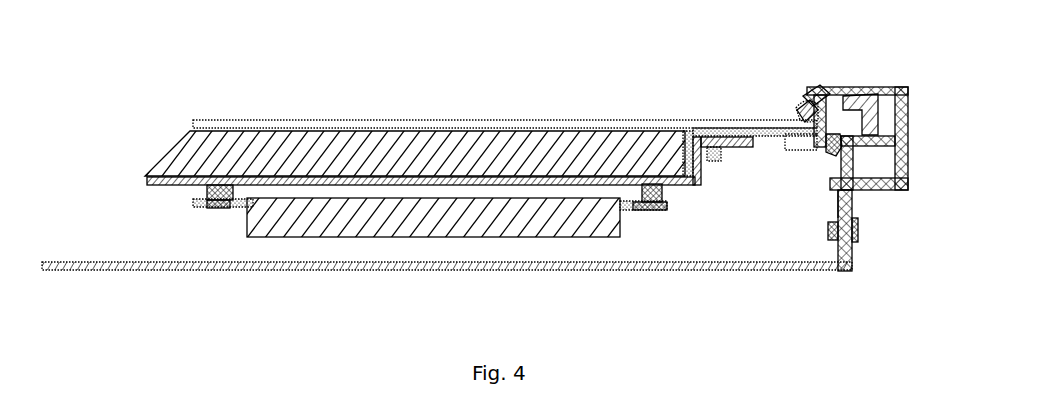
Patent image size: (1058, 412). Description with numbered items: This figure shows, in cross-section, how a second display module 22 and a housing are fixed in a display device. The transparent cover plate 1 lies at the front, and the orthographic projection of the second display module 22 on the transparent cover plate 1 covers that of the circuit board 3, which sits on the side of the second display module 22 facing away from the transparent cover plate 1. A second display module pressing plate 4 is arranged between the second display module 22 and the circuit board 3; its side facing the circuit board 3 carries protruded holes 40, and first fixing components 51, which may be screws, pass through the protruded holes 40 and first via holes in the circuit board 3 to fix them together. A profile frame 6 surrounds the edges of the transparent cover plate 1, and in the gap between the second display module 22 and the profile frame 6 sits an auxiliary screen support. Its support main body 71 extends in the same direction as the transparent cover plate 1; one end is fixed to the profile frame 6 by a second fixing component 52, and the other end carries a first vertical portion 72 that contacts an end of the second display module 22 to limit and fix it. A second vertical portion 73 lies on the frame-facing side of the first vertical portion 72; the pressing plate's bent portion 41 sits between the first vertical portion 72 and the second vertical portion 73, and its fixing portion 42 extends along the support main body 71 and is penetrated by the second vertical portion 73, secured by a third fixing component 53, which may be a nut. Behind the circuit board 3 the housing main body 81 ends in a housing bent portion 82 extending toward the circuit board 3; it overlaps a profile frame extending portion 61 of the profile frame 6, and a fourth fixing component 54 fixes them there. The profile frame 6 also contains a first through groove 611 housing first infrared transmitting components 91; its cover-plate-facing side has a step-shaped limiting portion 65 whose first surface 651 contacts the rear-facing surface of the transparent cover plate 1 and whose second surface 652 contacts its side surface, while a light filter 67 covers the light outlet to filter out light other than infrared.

The transparent cover plate 1 is at (538, 128).
The second display module 22 is at (470, 126).
The circuit board 3 is at (590, 237).
The second display module pressing plate 4 is at (150, 185).
The protruded holes 40 is at (200, 203).
The first fixing components 51 is at (218, 209).
The bent portion 41 is at (681, 133).
The fixing portion 42 is at (728, 133).
The first vertical portion 72 is at (712, 184).
The second vertical portion 73 is at (722, 150).
The third fixing component 53 is at (722, 153).
The support main body 71 is at (790, 152).
The profile frame 6 is at (908, 118).
The first through groove 611 is at (904, 92).
The profile frame extending portion 61 is at (855, 200).
The housing bent portion 82 is at (838, 200).
The fourth fixing component 54 is at (860, 232).
The housing main body 81 is at (696, 272).
The limiting portion 65 is at (833, 92).
The second surface 652 is at (802, 106).
The first surface 651 is at (812, 112).
The light filter 67 is at (813, 88).
The first infrared transmitting components 91 is at (882, 95).
The second fixing component 52 is at (836, 156).